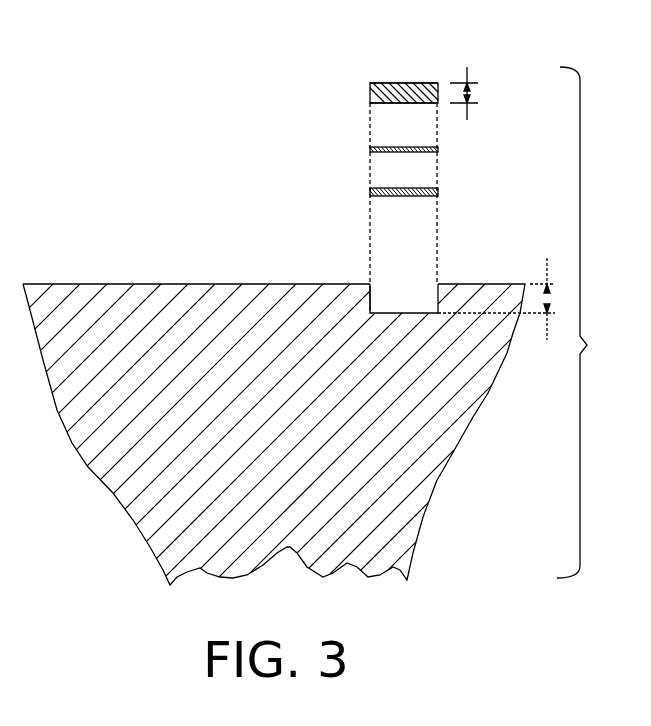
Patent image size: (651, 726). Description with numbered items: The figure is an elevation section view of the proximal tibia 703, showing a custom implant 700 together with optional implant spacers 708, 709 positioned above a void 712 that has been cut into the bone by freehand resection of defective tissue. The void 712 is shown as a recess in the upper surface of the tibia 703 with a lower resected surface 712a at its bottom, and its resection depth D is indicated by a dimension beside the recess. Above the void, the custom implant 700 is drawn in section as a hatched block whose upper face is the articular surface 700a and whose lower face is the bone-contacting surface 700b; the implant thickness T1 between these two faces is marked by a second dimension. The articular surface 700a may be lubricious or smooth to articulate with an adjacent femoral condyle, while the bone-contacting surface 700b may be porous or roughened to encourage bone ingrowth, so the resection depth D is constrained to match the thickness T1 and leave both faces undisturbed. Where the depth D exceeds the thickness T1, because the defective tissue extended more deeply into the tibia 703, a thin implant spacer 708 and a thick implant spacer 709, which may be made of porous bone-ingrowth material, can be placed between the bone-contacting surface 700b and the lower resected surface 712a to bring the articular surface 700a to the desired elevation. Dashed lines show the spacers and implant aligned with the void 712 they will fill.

The custom implant 700 is at (412, 86).
The articular surface 700a is at (388, 83).
The bone-contacting surface 700b is at (397, 104).
The tibia 703 is at (133, 266).
The thin implant spacer 708 is at (418, 152).
The thick implant spacer 709 is at (392, 188).
The void 712 is at (416, 301).
The lower resected surface 712a is at (393, 290).
The thickness T1 is at (484, 91).
The resection depth D is at (496, 299).